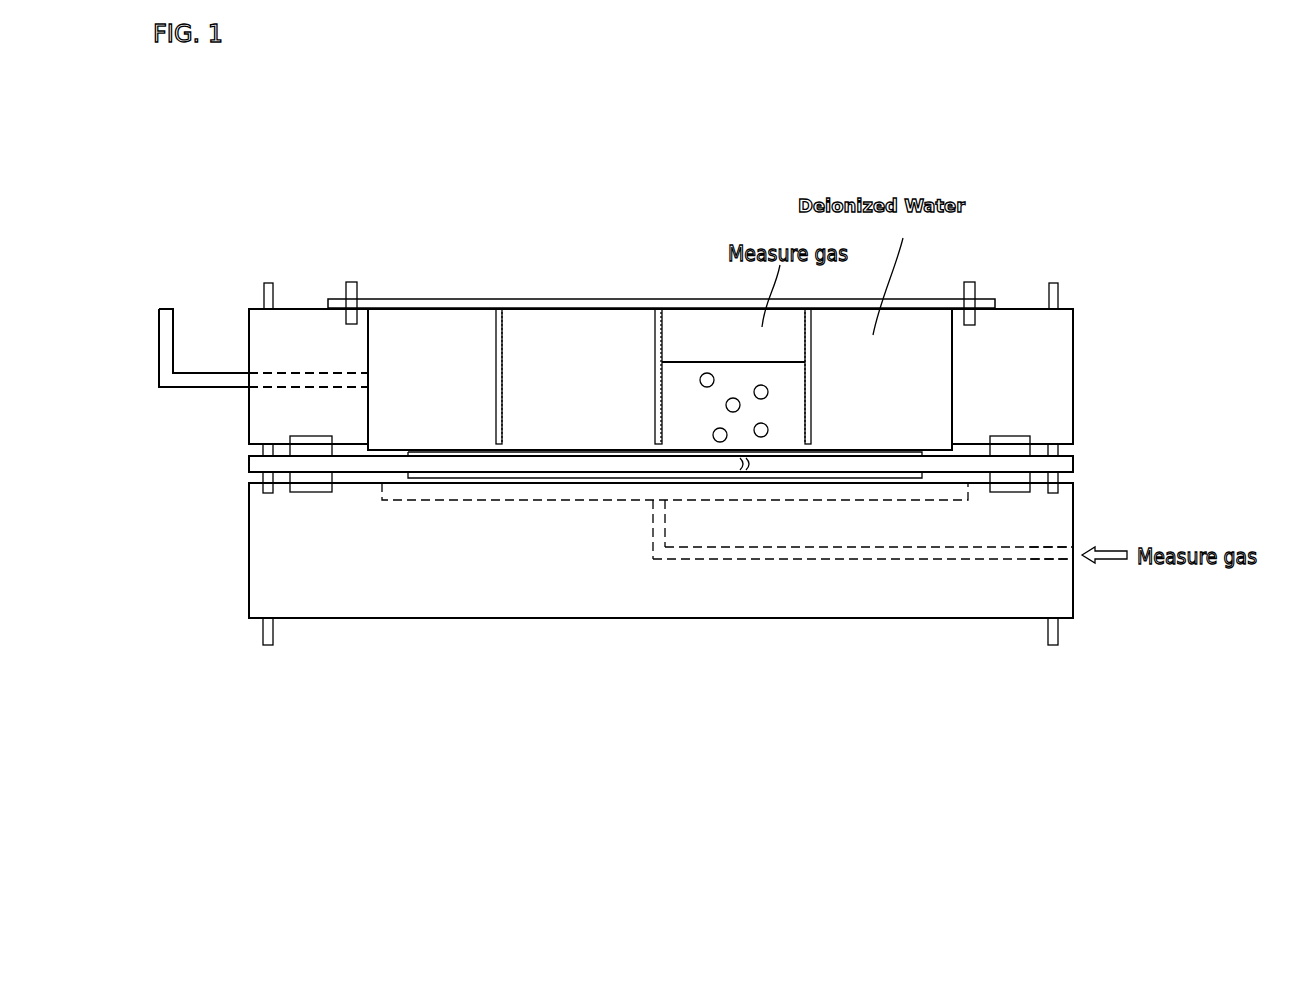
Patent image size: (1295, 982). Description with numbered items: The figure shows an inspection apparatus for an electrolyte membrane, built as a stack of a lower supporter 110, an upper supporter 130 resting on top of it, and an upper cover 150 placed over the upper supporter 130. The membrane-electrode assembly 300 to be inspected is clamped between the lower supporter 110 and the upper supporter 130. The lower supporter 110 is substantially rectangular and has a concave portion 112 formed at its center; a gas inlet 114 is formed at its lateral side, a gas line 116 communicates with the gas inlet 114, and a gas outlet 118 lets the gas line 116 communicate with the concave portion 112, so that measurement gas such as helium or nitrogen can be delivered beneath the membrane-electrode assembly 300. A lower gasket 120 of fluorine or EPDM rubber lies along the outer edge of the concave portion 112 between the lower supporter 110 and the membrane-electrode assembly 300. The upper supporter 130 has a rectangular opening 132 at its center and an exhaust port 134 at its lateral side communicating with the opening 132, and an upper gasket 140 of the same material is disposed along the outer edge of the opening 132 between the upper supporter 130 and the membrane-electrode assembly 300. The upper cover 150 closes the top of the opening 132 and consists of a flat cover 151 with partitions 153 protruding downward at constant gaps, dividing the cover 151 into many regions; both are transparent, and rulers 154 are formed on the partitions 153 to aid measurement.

The lower supporter 110 is at (243, 532).
The concave portion 112 is at (817, 500).
The gas inlet 114 is at (1075, 550).
The gas line 116 is at (955, 559).
The gas outlet 118 is at (658, 502).
The lower gasket 120 is at (1025, 490).
The upper supporter 130 is at (240, 398).
The opening 132 is at (952, 350).
The exhaust port 134 is at (285, 387).
The upper gasket 140 is at (1028, 435).
The upper cover 150 is at (438, 290).
The cover 151 is at (608, 302).
The partitions 153 is at (505, 308).
The rulers 154 is at (660, 308).
The membrane-electrode assembly 300 is at (243, 467).